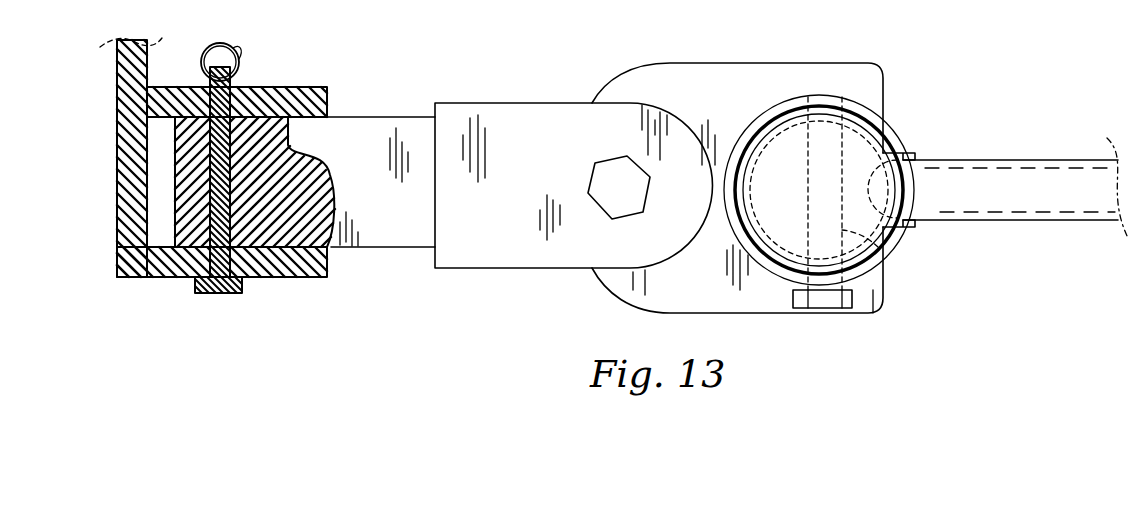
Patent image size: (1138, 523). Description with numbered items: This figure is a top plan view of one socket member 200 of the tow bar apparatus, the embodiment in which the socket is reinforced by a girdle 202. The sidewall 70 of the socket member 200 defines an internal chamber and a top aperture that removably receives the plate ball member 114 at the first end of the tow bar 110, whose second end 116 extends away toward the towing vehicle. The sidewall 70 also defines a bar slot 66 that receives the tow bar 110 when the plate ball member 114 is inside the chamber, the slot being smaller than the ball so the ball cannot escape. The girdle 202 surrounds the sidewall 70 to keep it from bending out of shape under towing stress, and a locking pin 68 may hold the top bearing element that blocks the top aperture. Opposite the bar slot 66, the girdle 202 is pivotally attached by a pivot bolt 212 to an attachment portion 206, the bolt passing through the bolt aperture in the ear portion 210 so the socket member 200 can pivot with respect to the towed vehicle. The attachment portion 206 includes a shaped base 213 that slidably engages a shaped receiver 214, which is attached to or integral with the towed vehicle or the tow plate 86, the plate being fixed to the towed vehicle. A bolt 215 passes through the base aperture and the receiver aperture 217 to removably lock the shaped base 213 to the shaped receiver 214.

The tow plate 86 is at (123, 204).
The bolt 215 is at (238, 73).
The shaped base 213 is at (300, 152).
The receiver aperture 217 is at (215, 294).
The shaped receiver 214 is at (258, 280).
The attachment portion 206 is at (473, 262).
The ear portion 210 is at (623, 117).
The pivot bolt 212 is at (622, 160).
The plate ball member 114 is at (797, 137).
The sidewall 70 is at (852, 93).
The bar slot 66 is at (918, 148).
The second end 116 is at (943, 160).
The tow bar 110 is at (1078, 160).
The locking pin 68 is at (886, 262).
The girdle 202 is at (770, 302).
The socket member 200 is at (942, 358).